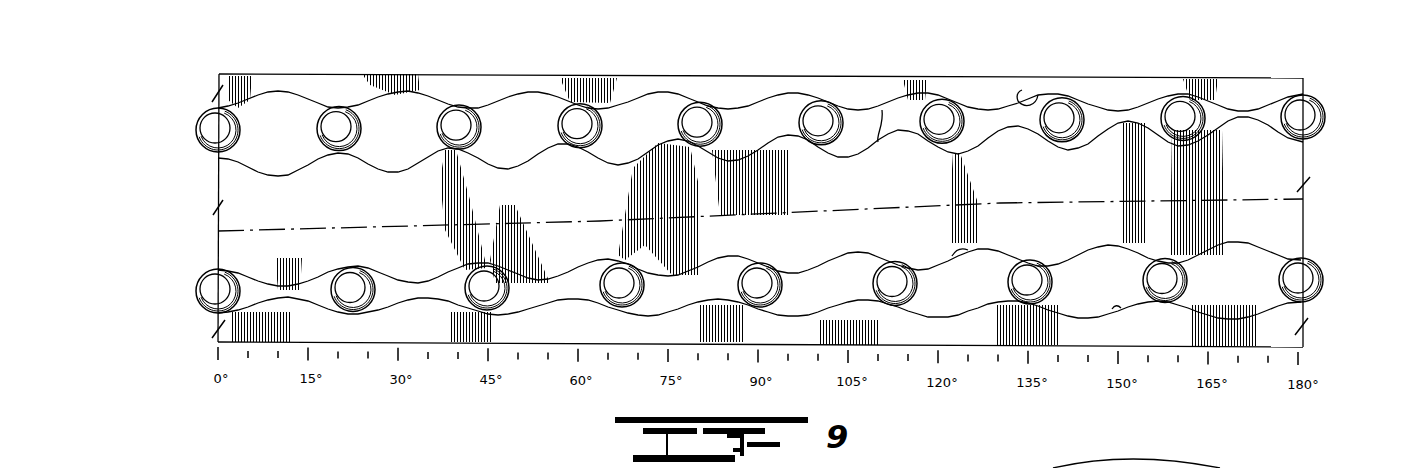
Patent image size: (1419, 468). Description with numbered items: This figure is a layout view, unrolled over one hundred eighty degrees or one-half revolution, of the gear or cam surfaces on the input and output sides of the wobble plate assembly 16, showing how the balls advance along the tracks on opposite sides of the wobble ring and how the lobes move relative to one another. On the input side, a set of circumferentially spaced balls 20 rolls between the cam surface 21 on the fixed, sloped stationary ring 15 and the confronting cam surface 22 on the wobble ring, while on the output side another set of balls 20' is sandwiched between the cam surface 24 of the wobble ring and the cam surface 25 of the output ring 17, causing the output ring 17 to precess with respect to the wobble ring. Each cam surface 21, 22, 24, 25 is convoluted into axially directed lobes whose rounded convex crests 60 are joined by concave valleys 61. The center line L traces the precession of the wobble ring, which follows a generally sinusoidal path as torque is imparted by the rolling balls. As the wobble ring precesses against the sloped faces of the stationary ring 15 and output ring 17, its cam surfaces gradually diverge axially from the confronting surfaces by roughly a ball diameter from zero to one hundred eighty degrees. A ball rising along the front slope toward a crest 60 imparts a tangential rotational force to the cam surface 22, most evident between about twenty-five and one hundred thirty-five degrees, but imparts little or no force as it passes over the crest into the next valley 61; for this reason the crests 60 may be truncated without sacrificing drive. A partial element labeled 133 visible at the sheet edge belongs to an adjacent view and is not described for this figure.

The stationary ring 15 is at (213, 320).
The wobble plate assembly 16 is at (219, 179).
The output ring 17 is at (220, 82).
The balls 20 is at (757, 267).
The balls 20' is at (757, 98).
The cam surface 21 is at (1118, 306).
The cam surface 22 is at (967, 251).
The cam surface 24 is at (882, 110).
The cam surface 25 is at (1038, 95).
The crests 60 is at (333, 106).
The valleys 61 is at (407, 105).
The center line L is at (1257, 200).
The element of adjacent figure 133 is at (1122, 467).